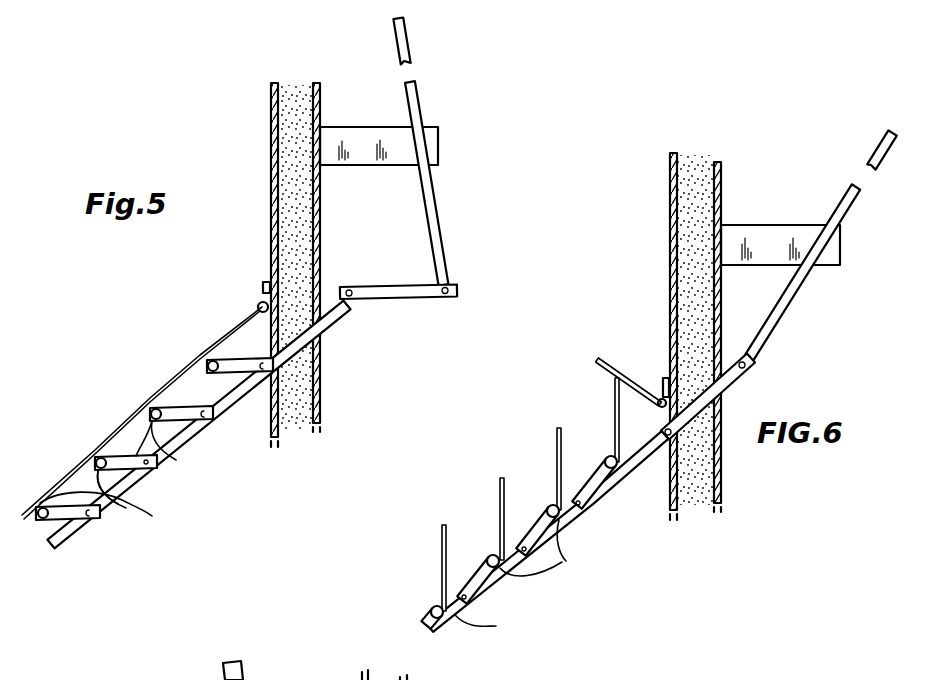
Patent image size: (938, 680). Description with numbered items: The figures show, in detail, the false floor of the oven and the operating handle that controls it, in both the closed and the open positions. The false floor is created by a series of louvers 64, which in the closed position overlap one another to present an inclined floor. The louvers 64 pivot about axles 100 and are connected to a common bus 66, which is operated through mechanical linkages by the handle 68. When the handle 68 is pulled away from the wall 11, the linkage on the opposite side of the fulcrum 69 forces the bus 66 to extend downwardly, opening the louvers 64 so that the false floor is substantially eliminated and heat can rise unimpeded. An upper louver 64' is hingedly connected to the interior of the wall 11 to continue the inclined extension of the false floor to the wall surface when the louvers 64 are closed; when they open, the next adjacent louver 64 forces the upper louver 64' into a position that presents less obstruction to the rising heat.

In FIG. 5, the wall 11 is at (322, 107).
In FIG. 6, the wall 11 is at (722, 196).
In FIG. 5, the louver 64 is at (154, 439).
In FIG. 6, the louver 64 is at (507, 503).
In FIG. 5, the upper louver 64' is at (146, 400).
In FIG. 6, the upper louver 64' is at (632, 367).
In FIG. 5, the common bus 66 is at (231, 395).
In FIG. 6, the common bus 66 is at (634, 471).
In FIG. 5, the handle 68 is at (418, 105).
In FIG. 6, the handle 68 is at (848, 205).
In FIG. 5, the fulcrum 69 is at (421, 145).
In FIG. 6, the fulcrum 69 is at (818, 246).
In FIG. 5, the axle 100 is at (176, 460).
In FIG. 6, the axle 100 is at (537, 579).